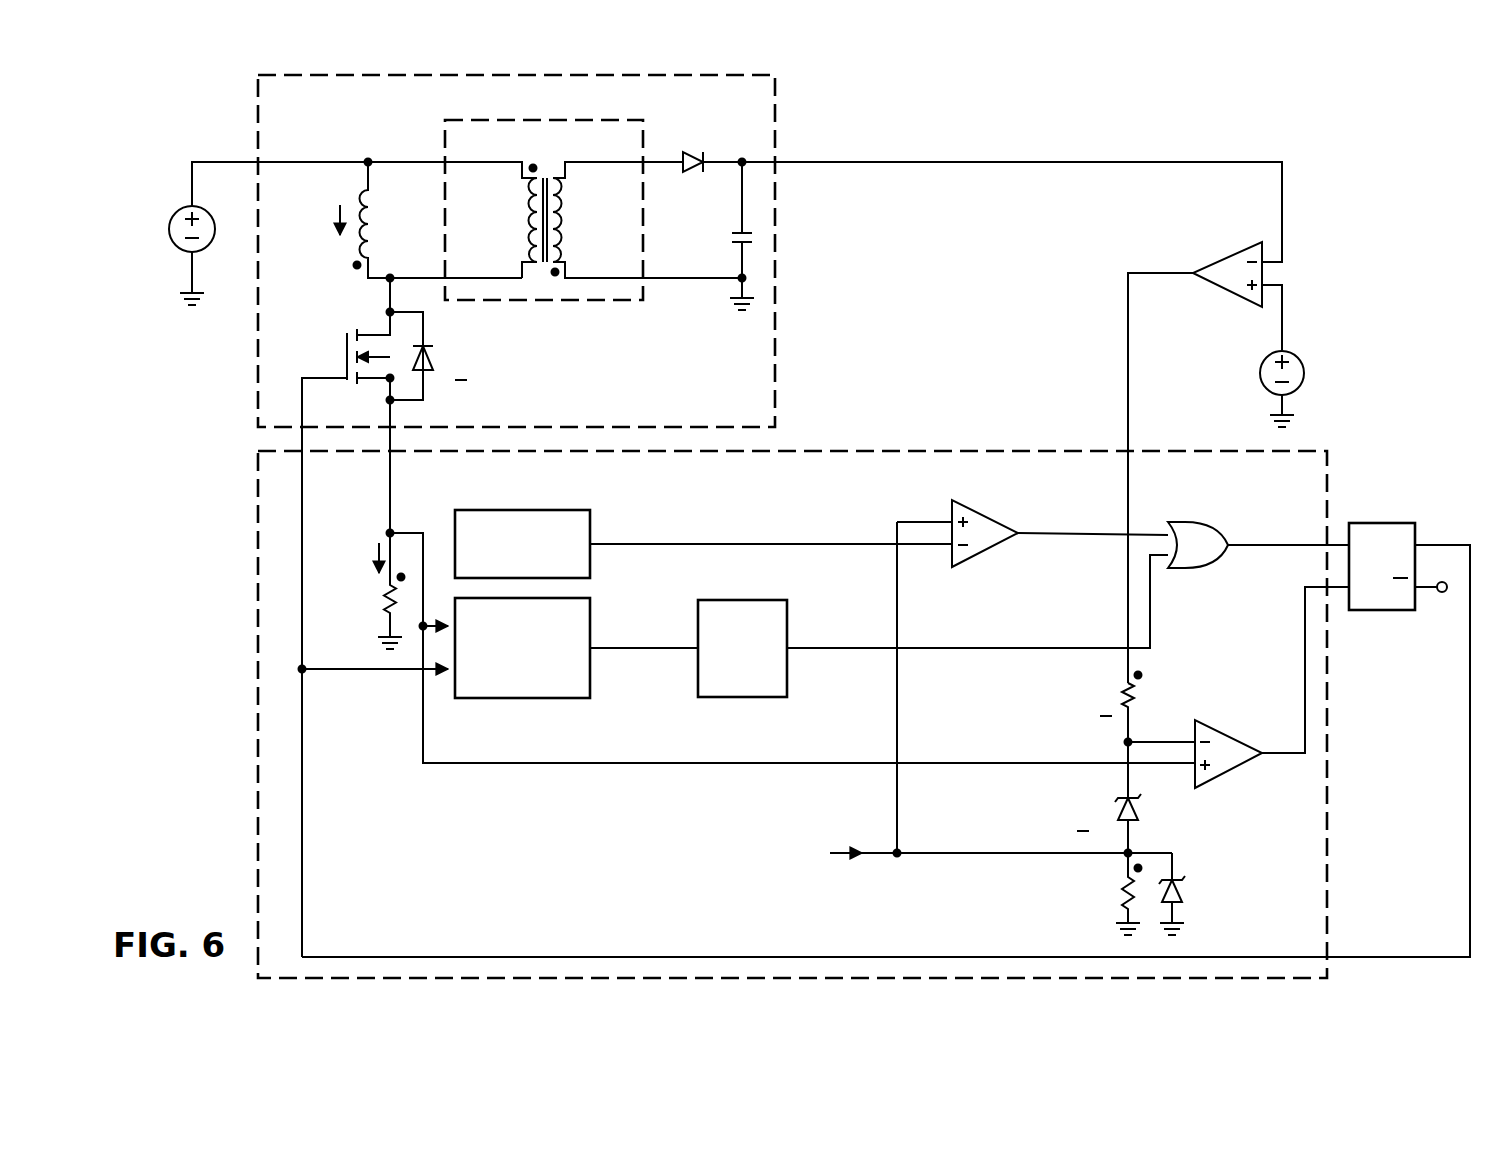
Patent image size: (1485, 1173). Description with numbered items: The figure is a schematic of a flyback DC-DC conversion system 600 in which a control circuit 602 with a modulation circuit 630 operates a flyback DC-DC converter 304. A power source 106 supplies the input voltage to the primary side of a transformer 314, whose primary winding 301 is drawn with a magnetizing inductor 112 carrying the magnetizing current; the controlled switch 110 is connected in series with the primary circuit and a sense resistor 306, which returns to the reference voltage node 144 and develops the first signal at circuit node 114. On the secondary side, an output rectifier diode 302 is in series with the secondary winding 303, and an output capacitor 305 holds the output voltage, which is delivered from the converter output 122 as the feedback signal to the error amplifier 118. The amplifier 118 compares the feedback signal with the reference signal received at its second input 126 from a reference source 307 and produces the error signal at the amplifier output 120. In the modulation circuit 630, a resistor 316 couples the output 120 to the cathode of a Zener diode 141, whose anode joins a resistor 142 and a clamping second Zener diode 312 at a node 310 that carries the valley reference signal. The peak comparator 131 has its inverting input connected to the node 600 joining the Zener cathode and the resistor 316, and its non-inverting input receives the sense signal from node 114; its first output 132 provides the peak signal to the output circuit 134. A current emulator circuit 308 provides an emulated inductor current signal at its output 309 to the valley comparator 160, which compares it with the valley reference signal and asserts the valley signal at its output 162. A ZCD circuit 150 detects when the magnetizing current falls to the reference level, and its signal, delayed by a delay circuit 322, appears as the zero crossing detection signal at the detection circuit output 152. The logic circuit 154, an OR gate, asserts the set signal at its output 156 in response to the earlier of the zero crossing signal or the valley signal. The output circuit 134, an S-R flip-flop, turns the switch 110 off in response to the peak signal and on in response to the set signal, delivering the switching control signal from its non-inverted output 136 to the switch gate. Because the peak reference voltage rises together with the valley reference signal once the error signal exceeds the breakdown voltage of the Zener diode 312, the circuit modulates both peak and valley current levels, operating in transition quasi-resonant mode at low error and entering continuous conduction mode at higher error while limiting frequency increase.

The power source 106 is at (170, 229).
The reference voltage node 144 is at (190, 278).
The magnetizing inductor 112 is at (355, 198).
The controlled switch 110 is at (345, 347).
The primary winding 301 is at (532, 205).
The secondary winding 303 is at (560, 240).
The output rectifier diode 302 is at (697, 170).
The output capacitor 305 is at (732, 240).
The transformer 314 is at (556, 302).
The flyback DC-DC converter 304 is at (778, 145).
The converter output 122 is at (1105, 162).
The flyback DC-DC conversion system 600 is at (1345, 132).
The error amplifier 118 is at (1228, 256).
The amplifier output 120 is at (1162, 275).
The control circuit 602 is at (1318, 272).
The second amplifier input 126 is at (1285, 330).
The reference source 307 is at (1305, 376).
The modulation circuit 630 is at (950, 449).
The sense resistor 306 is at (382, 596).
The circuit node 114 is at (423, 743).
The current emulator circuit 308 is at (592, 560).
The ZCD circuit 150 is at (592, 632).
The detection circuit output 152 is at (645, 655).
The delay circuit 322 is at (742, 700).
The current emulator output 309 is at (825, 548).
The node 310 is at (920, 520).
The valley comparator 160 is at (985, 553).
The second comparator output 162 is at (1080, 540).
The logic circuit 154 is at (1200, 520).
The logic circuit output 156 is at (1262, 548).
The output circuit 134 is at (1385, 520).
The non-inverted output 136 is at (1400, 956).
The first output 132 is at (1305, 682).
The first comparator 131 is at (1228, 772).
The resistor 316 is at (1140, 700).
The Zener diode 141 is at (1140, 810).
The resistor 142 is at (1120, 888).
The second Zener diode 312 is at (1183, 895).